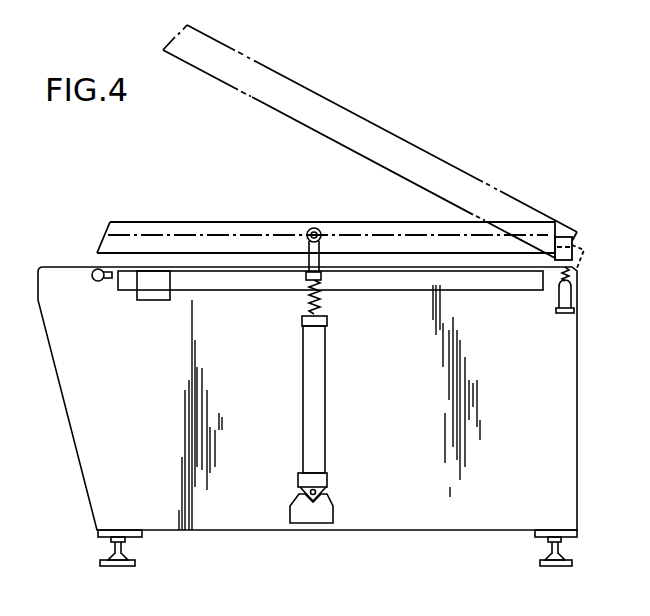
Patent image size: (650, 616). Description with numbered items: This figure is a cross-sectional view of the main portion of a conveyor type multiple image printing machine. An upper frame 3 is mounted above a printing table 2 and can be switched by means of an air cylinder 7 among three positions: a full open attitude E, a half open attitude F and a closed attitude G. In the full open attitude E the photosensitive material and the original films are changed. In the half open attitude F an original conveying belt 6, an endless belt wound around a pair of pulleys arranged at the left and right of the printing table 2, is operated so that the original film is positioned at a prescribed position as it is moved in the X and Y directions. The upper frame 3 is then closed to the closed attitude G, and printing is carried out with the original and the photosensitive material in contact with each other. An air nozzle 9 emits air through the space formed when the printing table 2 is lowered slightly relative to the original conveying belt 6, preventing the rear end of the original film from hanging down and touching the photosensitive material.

The printing table 2 is at (237, 281).
The upper frame 3 is at (453, 165).
The original conveying belt 6 is at (157, 286).
The air cylinder 7 is at (320, 398).
The air nozzle 9 is at (104, 282).
The full open attitude E is at (178, 35).
The half open attitude F is at (107, 221).
The closed attitude G is at (98, 263).